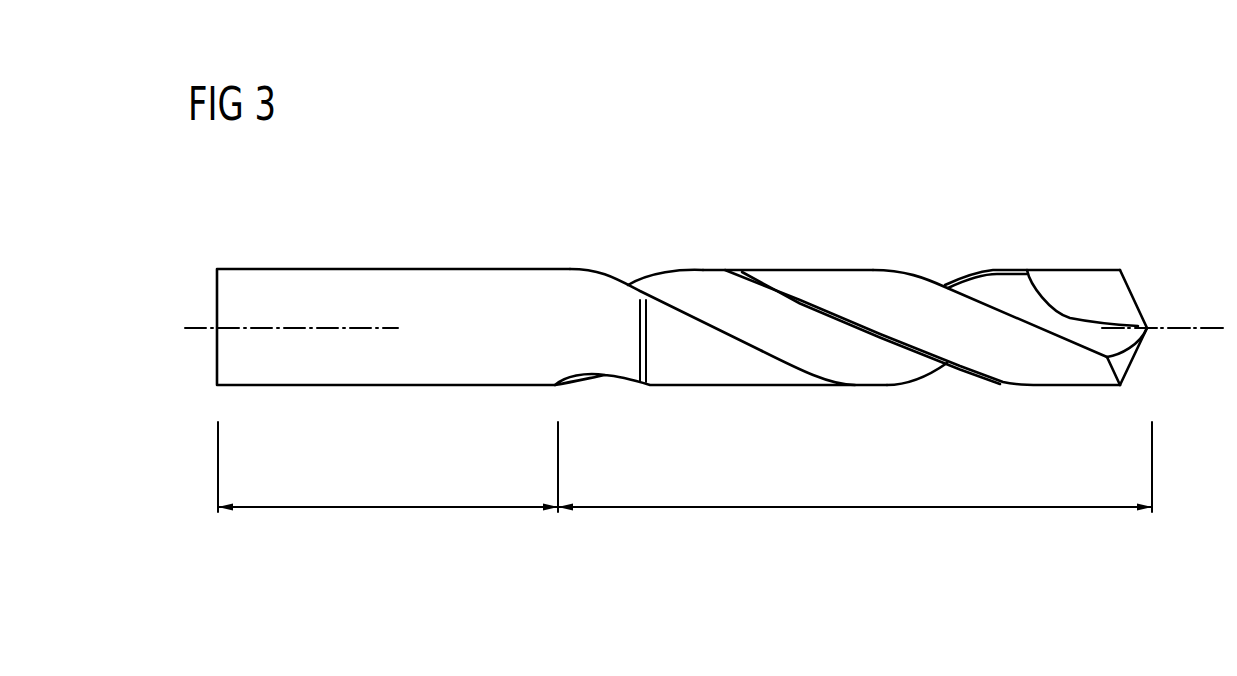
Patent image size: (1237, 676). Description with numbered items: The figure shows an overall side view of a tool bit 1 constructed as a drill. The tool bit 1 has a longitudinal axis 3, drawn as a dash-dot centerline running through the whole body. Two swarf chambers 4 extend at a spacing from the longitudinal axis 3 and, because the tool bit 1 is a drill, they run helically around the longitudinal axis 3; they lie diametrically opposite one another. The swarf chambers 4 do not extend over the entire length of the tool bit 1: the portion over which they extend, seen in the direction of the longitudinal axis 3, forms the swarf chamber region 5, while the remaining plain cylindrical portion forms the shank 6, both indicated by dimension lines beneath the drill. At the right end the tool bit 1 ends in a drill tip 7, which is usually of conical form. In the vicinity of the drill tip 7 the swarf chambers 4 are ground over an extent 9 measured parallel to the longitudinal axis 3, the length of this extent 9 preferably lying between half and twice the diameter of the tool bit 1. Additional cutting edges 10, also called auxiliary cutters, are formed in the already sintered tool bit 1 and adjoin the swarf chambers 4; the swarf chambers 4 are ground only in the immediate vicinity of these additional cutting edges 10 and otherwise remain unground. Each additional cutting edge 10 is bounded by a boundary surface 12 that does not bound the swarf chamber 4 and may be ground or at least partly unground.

The tool bit 1 is at (1020, 176).
The longitudinal axis 3 is at (1208, 327).
The swarf chamber 4 is at (705, 292).
The swarf chamber region 5 is at (857, 505).
The shank 6 is at (390, 505).
The drill tip 7 is at (1146, 279).
The extent 9 is at (1085, 292).
The additional cutting edge 10 is at (893, 343).
The boundary surface 12 is at (842, 285).